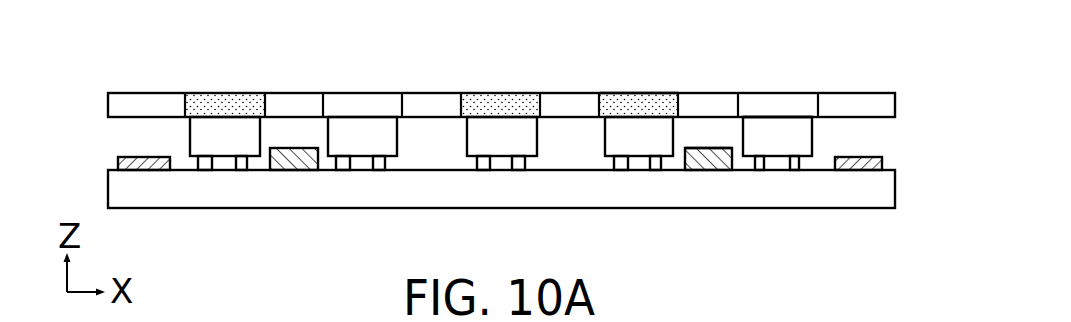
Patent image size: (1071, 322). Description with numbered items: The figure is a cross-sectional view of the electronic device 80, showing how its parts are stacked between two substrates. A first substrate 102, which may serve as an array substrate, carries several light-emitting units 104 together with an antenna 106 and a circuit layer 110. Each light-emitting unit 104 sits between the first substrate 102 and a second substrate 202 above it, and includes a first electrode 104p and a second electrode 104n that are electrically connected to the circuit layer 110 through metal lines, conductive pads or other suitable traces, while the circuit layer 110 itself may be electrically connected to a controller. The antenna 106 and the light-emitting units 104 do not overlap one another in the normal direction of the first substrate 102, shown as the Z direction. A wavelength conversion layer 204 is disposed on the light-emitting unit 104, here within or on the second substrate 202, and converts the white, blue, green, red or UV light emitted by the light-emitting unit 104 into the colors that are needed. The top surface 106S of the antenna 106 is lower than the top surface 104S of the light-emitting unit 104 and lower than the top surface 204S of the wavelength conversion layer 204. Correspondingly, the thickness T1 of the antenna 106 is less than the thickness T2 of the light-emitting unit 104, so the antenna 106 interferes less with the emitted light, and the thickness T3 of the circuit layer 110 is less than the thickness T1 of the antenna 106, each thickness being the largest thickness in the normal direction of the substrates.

The electronic device 80 is at (90, 38).
The first substrate 102 is at (865, 192).
The light-emitting unit 104 is at (188, 170).
The first electrode 104p is at (760, 166).
The second electrode 104n is at (798, 165).
The top surface of the light-emitting unit 104S is at (776, 109).
The antenna 106 is at (285, 160).
The top surface of the antenna 106S is at (704, 140).
The circuit layer 110 is at (150, 157).
The second substrate 202 is at (865, 108).
The wavelength conversion layer 204 is at (224, 103).
The top surface of the wavelength conversion layer 204S is at (634, 86).
The thickness of the antenna T1 is at (303, 200).
The thickness of the light-emitting unit T2 is at (409, 101).
The thickness of the circuit layer T3 is at (137, 200).